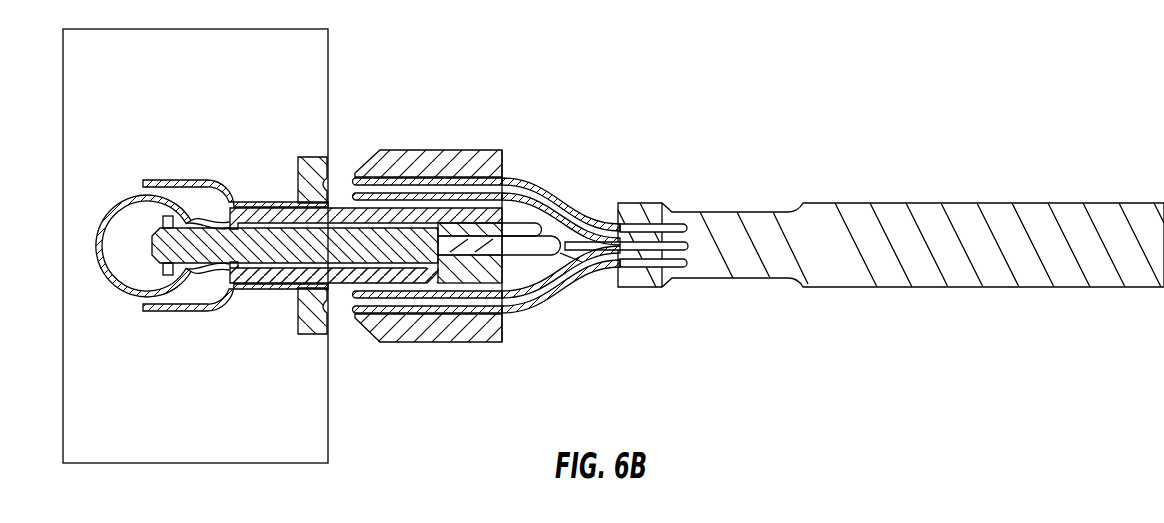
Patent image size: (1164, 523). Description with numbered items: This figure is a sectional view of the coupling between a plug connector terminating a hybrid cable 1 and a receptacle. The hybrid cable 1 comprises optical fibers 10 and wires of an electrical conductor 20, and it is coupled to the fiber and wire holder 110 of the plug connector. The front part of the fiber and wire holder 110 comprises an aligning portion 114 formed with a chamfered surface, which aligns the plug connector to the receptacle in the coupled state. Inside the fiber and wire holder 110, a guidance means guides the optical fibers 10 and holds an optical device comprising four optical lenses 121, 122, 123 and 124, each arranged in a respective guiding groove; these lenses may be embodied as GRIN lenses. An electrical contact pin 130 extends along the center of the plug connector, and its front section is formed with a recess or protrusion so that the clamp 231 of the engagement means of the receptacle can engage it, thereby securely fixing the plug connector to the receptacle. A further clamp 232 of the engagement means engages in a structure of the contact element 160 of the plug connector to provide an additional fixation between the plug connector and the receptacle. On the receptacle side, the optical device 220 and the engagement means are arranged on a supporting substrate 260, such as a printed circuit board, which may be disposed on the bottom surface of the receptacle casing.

The hybrid cable 1 is at (762, 210).
The optical fibers 10 is at (548, 180).
The electrical conductor 20 is at (553, 300).
The fiber and wire holder 110 is at (439, 250).
The aligning portion 114 is at (372, 152).
The optical lens 121 is at (375, 333).
The optical lens 122 is at (413, 185).
The optical lens 123 is at (410, 315).
The optical lens 124 is at (437, 200).
The electrical contact pin 130 is at (170, 262).
The contact element 160 is at (238, 204).
The optical device 220 is at (312, 157).
The clamp 231 is at (118, 214).
The clamp 232 is at (173, 178).
The supporting substrate 260 is at (110, 445).